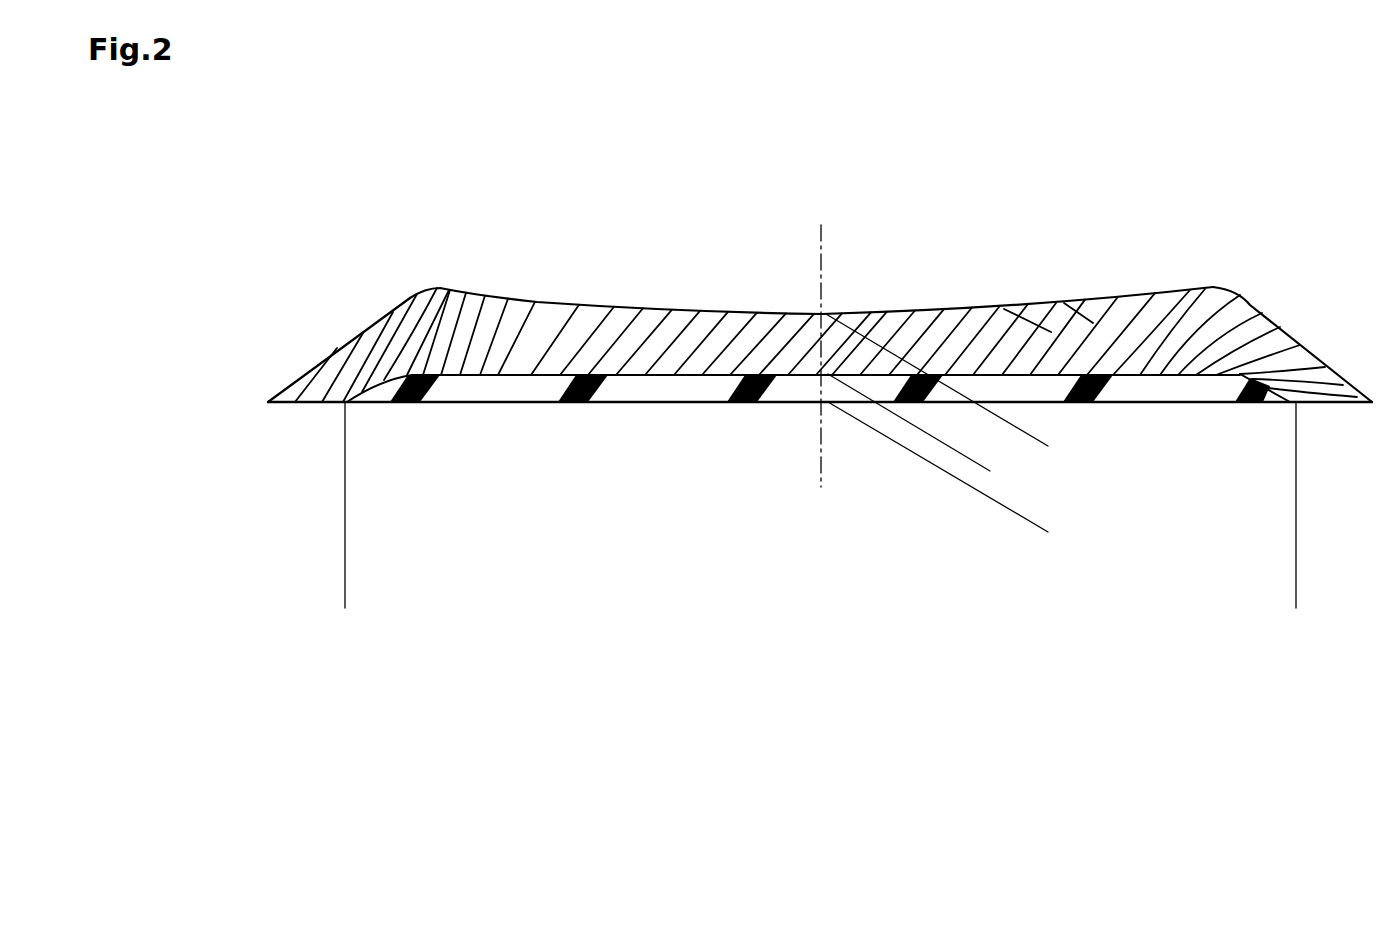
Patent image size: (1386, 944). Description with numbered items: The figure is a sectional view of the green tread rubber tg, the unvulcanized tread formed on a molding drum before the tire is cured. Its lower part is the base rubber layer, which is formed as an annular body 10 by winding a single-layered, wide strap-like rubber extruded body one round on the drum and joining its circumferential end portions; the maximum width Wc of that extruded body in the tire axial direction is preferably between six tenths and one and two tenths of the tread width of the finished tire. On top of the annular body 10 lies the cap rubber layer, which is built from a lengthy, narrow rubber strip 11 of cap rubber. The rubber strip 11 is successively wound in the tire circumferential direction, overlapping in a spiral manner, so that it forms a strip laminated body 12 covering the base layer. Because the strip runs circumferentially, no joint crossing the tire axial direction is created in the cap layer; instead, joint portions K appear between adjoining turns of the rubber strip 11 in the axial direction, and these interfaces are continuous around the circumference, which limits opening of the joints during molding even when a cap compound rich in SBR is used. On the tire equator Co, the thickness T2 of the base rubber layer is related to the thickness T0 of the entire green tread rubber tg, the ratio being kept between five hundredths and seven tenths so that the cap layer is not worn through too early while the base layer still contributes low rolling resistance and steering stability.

The rubber strip 11 is at (295, 388).
The strip laminated body 12 is at (537, 317).
The annular body 10 is at (503, 392).
The tire equator Co is at (825, 240).
The joint portions (interfaces) K is at (1066, 304).
The green tread rubber tg is at (1202, 263).
The thickness of the base rubber layer T2 is at (982, 423).
The thickness of the entire green tread rubber T0 is at (1048, 446).
The maximum width of the rubber extruded bodies Wc is at (1296, 602).